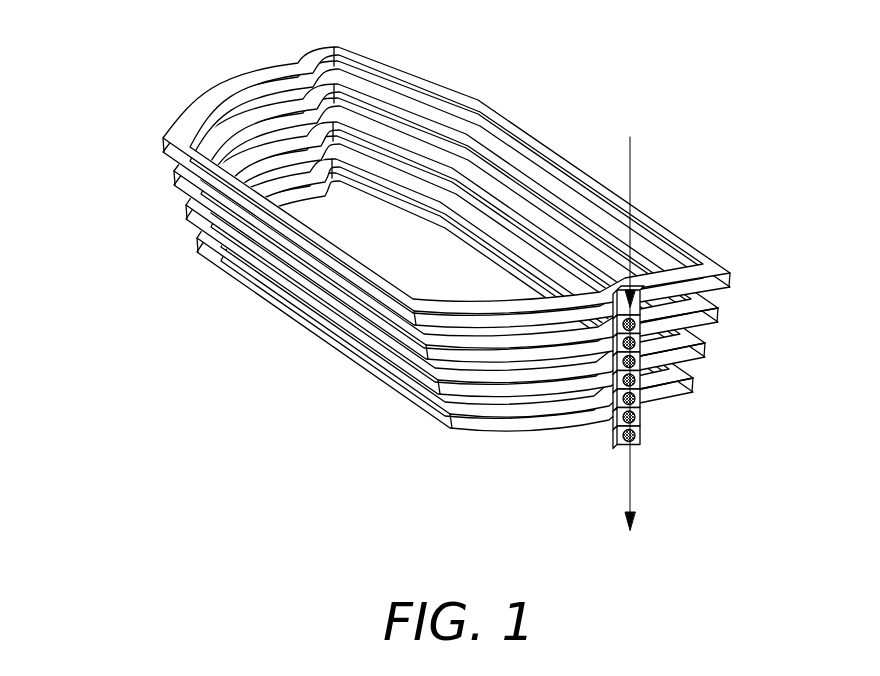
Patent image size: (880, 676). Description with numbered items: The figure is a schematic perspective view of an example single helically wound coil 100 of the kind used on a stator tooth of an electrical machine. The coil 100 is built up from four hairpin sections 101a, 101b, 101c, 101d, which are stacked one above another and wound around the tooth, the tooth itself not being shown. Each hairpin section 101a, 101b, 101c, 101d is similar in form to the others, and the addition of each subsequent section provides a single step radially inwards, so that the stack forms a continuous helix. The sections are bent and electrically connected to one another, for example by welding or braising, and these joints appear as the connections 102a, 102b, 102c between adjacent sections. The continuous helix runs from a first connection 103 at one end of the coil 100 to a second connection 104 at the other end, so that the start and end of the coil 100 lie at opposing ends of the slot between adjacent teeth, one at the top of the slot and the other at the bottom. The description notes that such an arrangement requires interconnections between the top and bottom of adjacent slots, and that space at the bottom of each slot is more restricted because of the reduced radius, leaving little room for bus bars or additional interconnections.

The helically wound coil 100 is at (601, 55).
The hairpin section 101a is at (163, 138).
The hairpin section 101b is at (174, 171).
The hairpin section 101c is at (186, 205).
The hairpin section 101d is at (197, 238).
The connection 102a is at (688, 324).
The connection 102b is at (690, 358).
The connection 102c is at (680, 393).
The first connection 103 is at (644, 291).
The second connection 104 is at (614, 438).